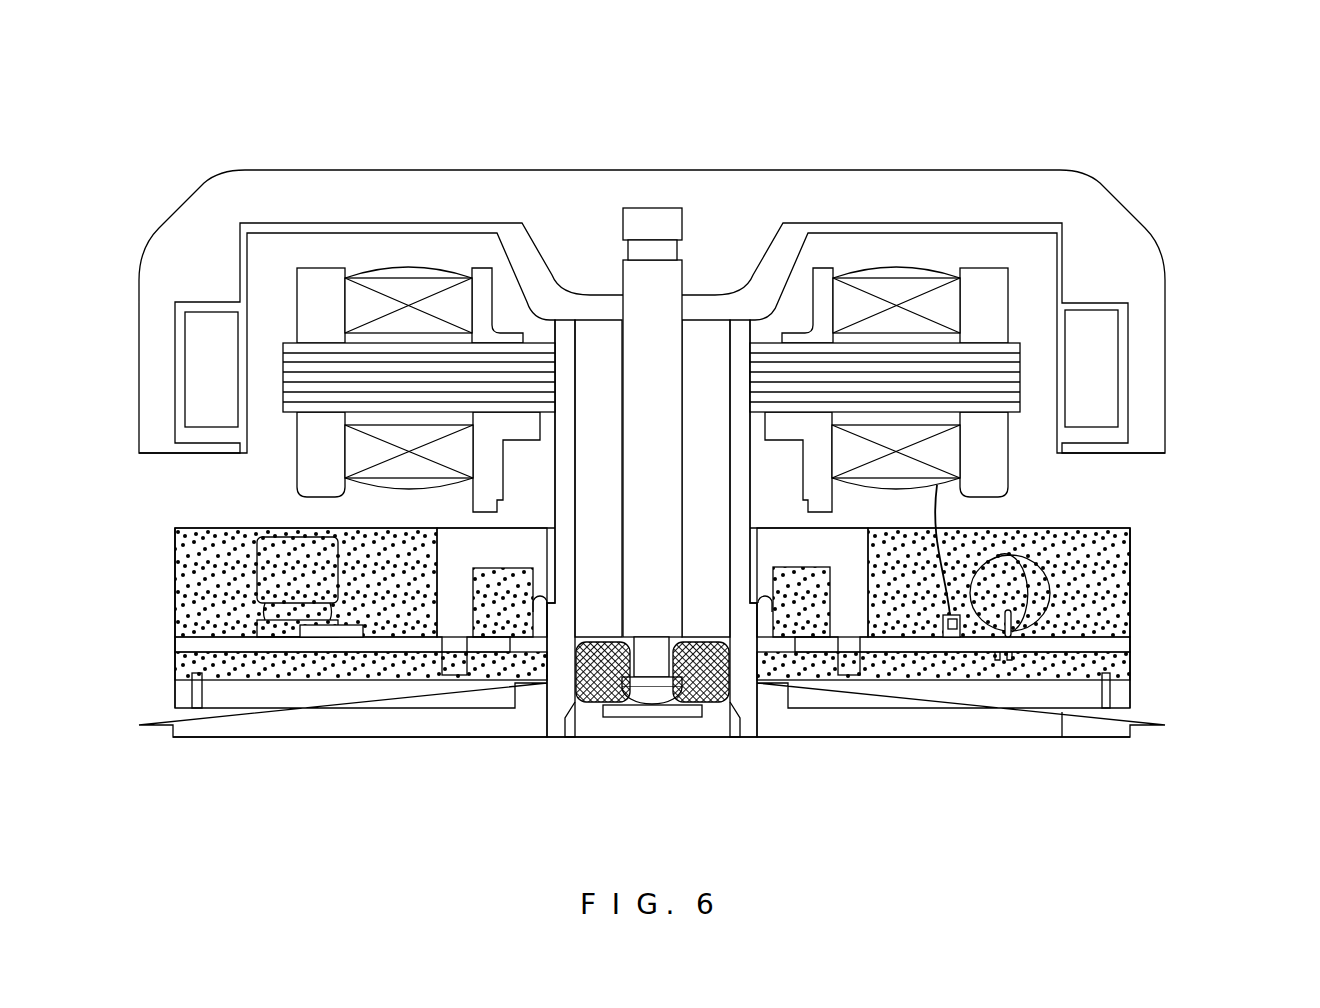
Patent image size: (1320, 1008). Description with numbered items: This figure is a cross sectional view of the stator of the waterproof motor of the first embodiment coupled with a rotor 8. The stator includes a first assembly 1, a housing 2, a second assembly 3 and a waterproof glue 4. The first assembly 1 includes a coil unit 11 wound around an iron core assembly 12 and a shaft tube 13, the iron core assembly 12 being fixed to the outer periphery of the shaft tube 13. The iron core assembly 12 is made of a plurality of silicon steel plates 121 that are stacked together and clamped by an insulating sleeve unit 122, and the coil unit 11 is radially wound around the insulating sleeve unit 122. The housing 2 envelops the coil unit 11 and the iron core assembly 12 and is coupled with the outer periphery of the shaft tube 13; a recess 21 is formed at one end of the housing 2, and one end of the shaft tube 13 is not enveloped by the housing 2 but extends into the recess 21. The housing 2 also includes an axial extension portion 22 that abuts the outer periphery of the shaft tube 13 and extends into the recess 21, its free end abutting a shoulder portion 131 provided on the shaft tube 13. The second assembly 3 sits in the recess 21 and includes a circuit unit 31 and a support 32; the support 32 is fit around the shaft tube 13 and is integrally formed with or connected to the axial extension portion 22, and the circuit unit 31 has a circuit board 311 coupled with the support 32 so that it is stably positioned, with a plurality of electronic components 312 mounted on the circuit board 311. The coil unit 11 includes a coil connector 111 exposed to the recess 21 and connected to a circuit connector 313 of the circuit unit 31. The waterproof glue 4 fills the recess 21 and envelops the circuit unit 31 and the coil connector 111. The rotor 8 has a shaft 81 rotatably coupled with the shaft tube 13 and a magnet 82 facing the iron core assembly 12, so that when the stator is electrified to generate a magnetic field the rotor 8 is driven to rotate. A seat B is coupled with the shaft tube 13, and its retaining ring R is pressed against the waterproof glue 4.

The rotor 8 is at (651, 227).
The first assembly 1 is at (270, 271).
The coil unit 11 is at (904, 283).
The iron core assembly 12 is at (703, 445).
The silicon steel plates 121 is at (1013, 378).
The insulating sleeve unit 122 is at (990, 307).
The shaft tube 13 is at (627, 440).
The shoulder portion 131 is at (540, 610).
The shaft 81 is at (636, 282).
The magnet 82 is at (1098, 395).
The housing 2 is at (701, 623).
The recess 21 is at (1033, 714).
The axial extension portion 22 is at (762, 575).
The second assembly 3 is at (645, 689).
The circuit unit 31 is at (645, 693).
The circuit board 311 is at (287, 647).
The electronic components 312 is at (268, 585).
The circuit connector 313 is at (940, 625).
The support 32 is at (450, 610).
The waterproof glue 4 is at (950, 667).
The coil connector 111 is at (900, 725).
The seat B is at (1065, 725).
The retaining ring R is at (1102, 697).